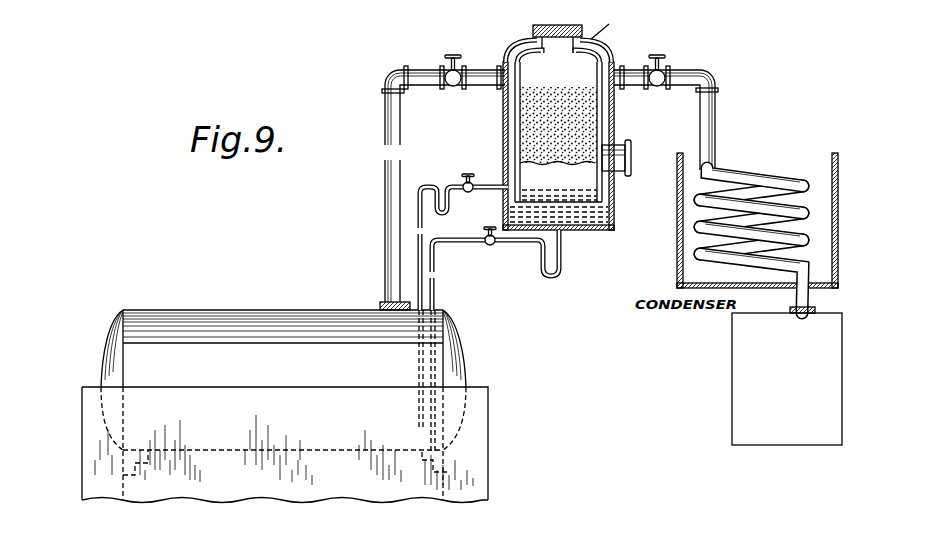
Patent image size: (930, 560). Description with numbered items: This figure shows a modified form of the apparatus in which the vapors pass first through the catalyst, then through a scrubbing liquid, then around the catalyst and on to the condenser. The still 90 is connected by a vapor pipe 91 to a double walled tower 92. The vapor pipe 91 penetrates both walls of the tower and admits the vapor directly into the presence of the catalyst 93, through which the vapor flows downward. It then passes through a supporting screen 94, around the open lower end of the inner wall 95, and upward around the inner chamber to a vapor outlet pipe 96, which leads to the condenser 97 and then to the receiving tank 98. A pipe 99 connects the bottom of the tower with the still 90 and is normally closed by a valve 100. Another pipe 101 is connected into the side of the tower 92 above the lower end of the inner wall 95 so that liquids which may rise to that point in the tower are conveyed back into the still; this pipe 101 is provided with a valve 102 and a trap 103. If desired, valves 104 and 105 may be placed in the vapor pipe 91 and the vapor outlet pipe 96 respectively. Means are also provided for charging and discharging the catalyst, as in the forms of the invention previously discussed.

The still 90 is at (228, 327).
The vapor pipe 91 is at (388, 163).
The double walled tower 92 is at (503, 124).
The catalyst 93 is at (583, 107).
The supporting screen 94 is at (545, 160).
The inner wall 95 is at (612, 186).
The vapor outlet pipe 96 is at (624, 72).
The condenser 97 is at (725, 172).
The receiving tank 98 is at (787, 379).
The pipe 99 is at (518, 247).
The valve 100 is at (491, 247).
The pipe 101 is at (493, 190).
The valve 102 is at (463, 182).
The trap 103 is at (443, 214).
The valve 104 is at (444, 68).
The valve 105 is at (667, 64).